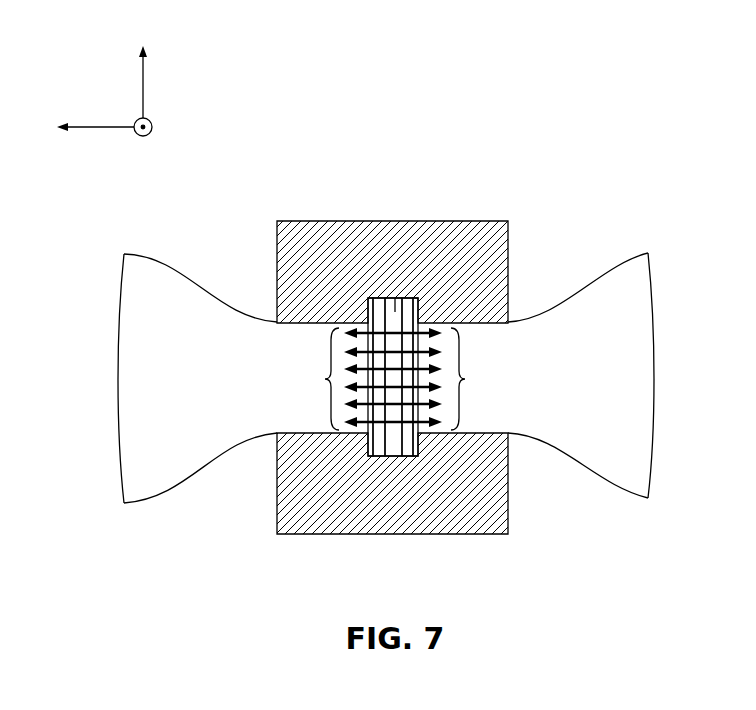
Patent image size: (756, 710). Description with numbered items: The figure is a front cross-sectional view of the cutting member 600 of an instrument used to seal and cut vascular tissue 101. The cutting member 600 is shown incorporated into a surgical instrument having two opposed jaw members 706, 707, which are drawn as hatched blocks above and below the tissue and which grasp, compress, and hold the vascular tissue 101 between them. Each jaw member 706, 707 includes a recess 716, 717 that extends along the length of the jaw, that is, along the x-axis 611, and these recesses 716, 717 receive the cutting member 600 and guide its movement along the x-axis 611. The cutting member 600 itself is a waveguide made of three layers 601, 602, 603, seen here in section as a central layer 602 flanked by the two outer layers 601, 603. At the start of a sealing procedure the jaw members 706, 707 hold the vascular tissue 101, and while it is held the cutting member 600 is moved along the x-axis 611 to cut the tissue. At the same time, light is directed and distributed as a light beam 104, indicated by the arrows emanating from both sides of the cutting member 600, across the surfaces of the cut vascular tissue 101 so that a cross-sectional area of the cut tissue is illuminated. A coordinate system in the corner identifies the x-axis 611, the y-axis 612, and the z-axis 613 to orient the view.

The vascular tissue 101 is at (183, 418).
The light beam 104 is at (393, 379).
The cutting member 600 is at (390, 290).
The first waveguide layer 601 is at (382, 445).
The second waveguide layer 602 is at (396, 312).
The third waveguide layer 603 is at (409, 447).
The x-axis 611 is at (152, 132).
The y-axis 612 is at (110, 127).
The z-axis 613 is at (145, 84).
The jaw member 706 is at (312, 228).
The jaw member 707 is at (313, 510).
The recess 716 is at (368, 304).
The recess 717 is at (420, 441).